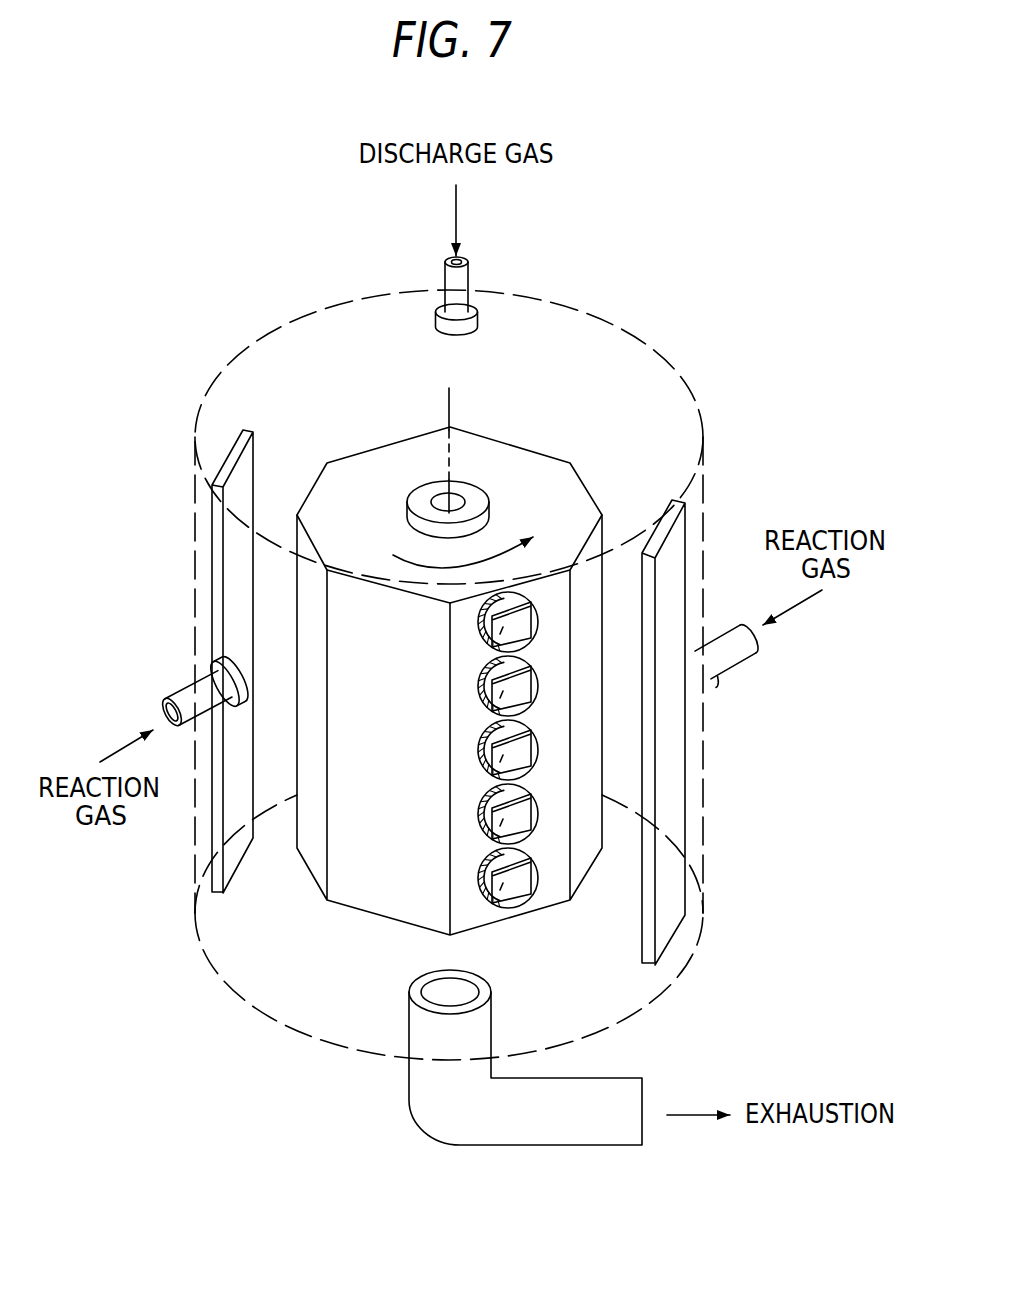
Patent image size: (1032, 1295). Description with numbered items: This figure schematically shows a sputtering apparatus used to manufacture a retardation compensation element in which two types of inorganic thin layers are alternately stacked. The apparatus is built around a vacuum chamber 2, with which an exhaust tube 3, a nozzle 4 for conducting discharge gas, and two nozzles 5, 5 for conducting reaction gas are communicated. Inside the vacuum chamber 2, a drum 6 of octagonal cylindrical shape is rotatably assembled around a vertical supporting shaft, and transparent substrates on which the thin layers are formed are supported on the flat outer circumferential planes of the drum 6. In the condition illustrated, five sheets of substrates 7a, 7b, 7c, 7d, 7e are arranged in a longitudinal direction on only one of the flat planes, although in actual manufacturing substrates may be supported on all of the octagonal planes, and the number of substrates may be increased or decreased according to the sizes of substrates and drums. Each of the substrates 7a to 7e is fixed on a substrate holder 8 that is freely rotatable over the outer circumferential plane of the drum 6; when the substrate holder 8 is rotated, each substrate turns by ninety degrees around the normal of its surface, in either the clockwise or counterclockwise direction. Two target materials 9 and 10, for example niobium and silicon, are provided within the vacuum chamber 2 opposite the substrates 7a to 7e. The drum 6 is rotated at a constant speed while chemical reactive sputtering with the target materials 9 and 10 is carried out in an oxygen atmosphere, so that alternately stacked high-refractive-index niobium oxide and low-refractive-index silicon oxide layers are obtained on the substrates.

The vacuum chamber 2 is at (607, 320).
The exhaust tube 3 is at (409, 1093).
The nozzle for conducting discharge gas 4 is at (470, 275).
The nozzle for conducting reaction gas 5 is at (185, 683).
The drum 6 is at (388, 440).
The substrate 7a is at (478, 650).
The substrate 7b is at (479, 696).
The substrate 7c is at (479, 756).
The substrate 7d is at (483, 842).
The substrate 7e is at (487, 890).
The substrate holder 8 is at (478, 628).
The target material 9 is at (672, 834).
The target material 10 is at (240, 562).